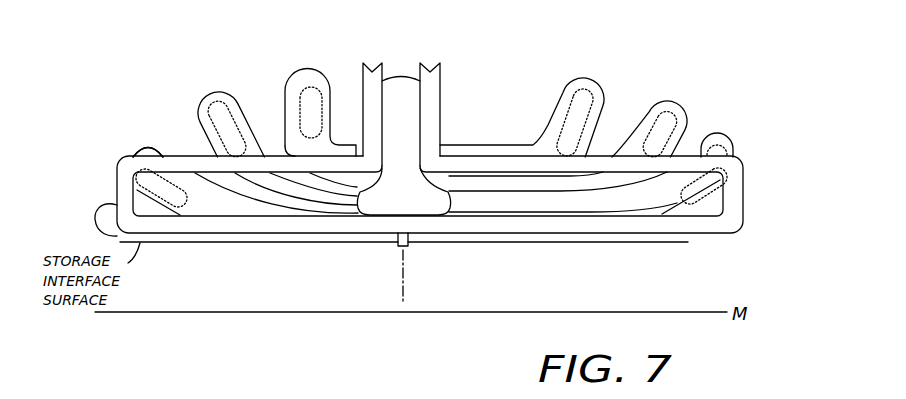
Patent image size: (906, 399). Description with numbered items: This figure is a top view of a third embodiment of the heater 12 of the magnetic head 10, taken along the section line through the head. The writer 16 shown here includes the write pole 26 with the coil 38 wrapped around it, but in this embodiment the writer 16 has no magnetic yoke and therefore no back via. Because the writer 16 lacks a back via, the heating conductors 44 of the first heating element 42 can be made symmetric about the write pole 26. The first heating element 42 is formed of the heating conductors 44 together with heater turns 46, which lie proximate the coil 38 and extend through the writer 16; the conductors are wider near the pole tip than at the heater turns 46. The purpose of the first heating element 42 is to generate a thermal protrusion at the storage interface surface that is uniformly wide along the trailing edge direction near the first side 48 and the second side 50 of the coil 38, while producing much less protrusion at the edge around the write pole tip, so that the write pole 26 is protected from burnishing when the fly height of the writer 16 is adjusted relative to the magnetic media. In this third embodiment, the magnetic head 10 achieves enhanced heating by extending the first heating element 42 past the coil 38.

The magnetic head 10 is at (672, 78).
The heater 12 is at (432, 100).
The writer 16 is at (700, 96).
The write pole 26 is at (399, 182).
The coil 38 is at (598, 93).
The first heating element 42 is at (313, 224).
The heating conductors 44 is at (660, 226).
The heater turns 46 is at (97, 212).
The first side 48 is at (113, 107).
The second side 50 is at (745, 80).